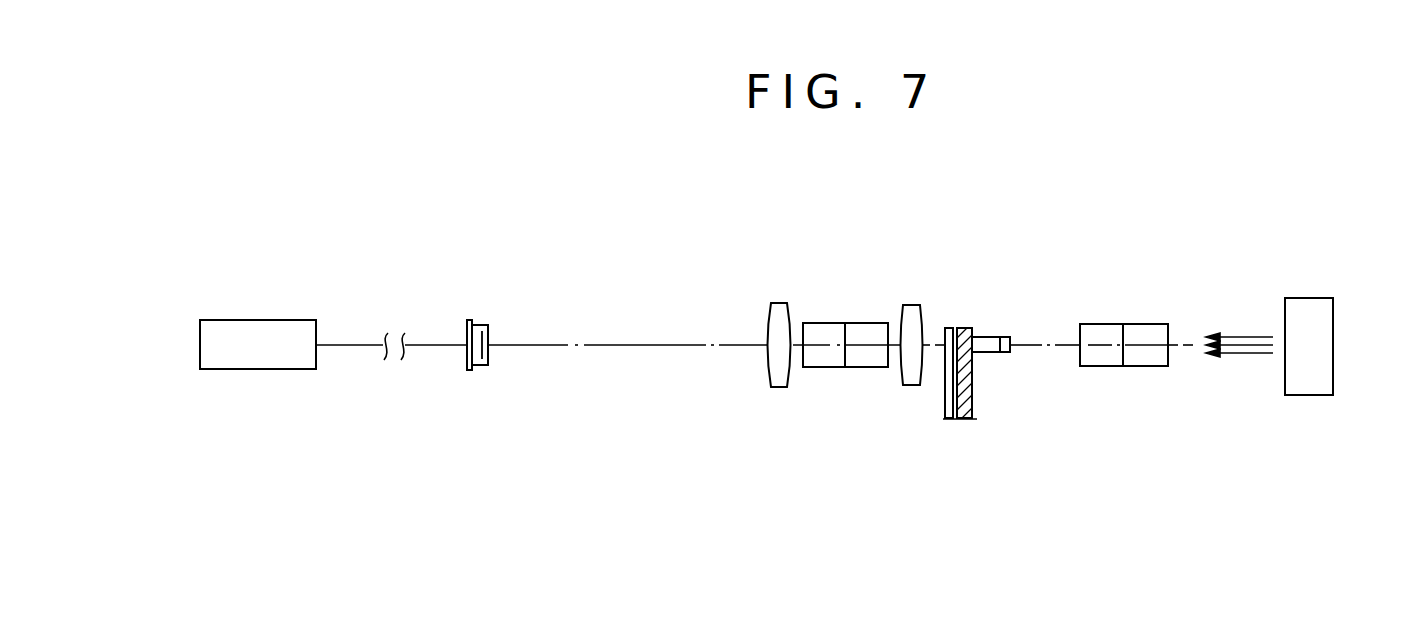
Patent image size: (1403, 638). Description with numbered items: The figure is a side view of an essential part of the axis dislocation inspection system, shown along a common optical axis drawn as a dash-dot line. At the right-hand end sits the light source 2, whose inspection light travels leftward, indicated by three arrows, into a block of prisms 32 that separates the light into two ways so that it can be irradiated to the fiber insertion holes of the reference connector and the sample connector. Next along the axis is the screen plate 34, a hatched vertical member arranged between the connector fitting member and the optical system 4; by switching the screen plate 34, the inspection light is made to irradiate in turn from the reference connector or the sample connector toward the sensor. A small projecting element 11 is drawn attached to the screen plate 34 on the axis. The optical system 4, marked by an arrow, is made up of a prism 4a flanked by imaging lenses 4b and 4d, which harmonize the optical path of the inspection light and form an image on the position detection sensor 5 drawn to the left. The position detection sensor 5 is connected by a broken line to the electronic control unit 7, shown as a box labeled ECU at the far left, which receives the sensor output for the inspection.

The electronic control unit 7 is at (282, 320).
The position detection sensor 5 is at (477, 322).
The optical system 4 is at (842, 336).
The imaging lens 4b is at (778, 382).
The prism 4a is at (862, 366).
The imaging lens 4d is at (910, 383).
The screen plate 34 is at (948, 325).
The stud / projection 11 is at (990, 337).
The prisms 32 is at (1137, 365).
The light source 2 is at (1310, 300).